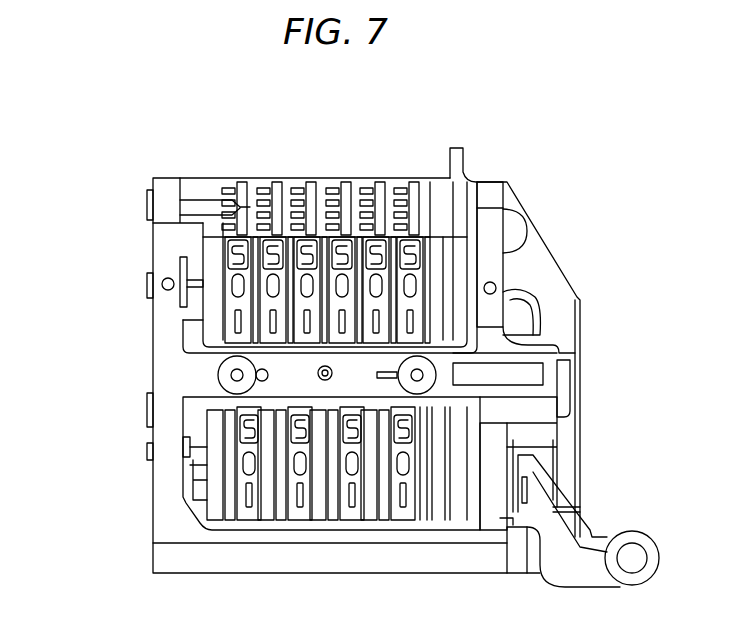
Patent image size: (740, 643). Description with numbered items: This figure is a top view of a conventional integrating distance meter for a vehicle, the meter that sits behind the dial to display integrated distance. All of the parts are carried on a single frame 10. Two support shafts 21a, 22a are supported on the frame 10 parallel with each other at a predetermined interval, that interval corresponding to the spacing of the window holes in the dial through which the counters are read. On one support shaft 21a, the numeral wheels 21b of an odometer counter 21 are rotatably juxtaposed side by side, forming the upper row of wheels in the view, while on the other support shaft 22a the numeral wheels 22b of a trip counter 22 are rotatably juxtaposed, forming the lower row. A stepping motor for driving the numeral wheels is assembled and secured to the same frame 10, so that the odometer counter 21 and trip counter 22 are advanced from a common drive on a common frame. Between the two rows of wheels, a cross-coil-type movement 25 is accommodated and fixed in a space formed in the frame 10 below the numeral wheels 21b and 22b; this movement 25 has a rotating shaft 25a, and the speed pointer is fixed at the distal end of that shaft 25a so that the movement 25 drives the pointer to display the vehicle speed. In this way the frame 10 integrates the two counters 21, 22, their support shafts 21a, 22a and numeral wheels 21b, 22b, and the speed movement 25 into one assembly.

The frame 10 is at (165, 327).
The odometer counter 21 is at (267, 236).
The support shaft 21a is at (187, 272).
The numeral wheels 21b is at (385, 237).
The trip counter 22 is at (271, 512).
The support shaft 22a is at (177, 447).
The numeral wheels 22b is at (393, 520).
The cross-coil-type movement 25 is at (257, 365).
The rotating shaft 25a is at (320, 366).